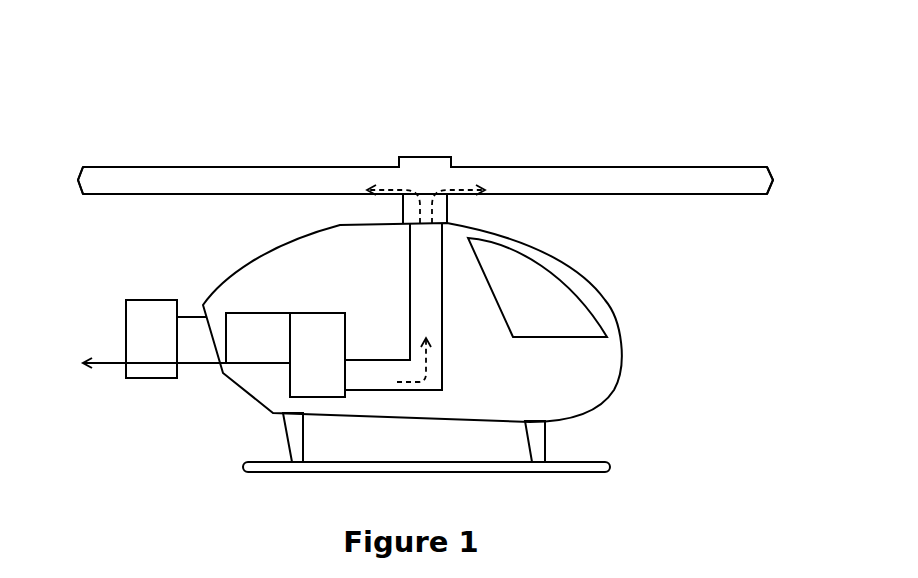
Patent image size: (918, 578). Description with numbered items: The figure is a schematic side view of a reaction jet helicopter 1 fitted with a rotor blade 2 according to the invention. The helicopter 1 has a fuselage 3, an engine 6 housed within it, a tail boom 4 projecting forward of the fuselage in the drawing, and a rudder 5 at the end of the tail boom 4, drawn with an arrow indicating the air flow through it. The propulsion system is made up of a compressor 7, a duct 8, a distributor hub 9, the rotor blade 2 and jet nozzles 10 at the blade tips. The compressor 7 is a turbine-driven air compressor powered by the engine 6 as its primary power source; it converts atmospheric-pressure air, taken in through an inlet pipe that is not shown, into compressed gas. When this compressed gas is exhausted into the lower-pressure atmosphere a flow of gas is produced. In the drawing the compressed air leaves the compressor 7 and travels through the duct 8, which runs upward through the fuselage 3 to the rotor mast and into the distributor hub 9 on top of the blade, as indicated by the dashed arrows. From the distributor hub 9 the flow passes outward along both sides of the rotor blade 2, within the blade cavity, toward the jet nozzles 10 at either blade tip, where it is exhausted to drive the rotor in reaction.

The reaction jet helicopter 1 is at (423, 245).
The rotor blade 2 is at (300, 166).
The fuselage 3 is at (622, 345).
The tail boom 4 is at (190, 313).
The rudder 5 is at (128, 379).
The engine 6 is at (258, 338).
The compressor 7 is at (317, 355).
The duct 8 is at (442, 360).
The distributor hub 9 is at (432, 157).
The jet nozzles 10 is at (75, 168).